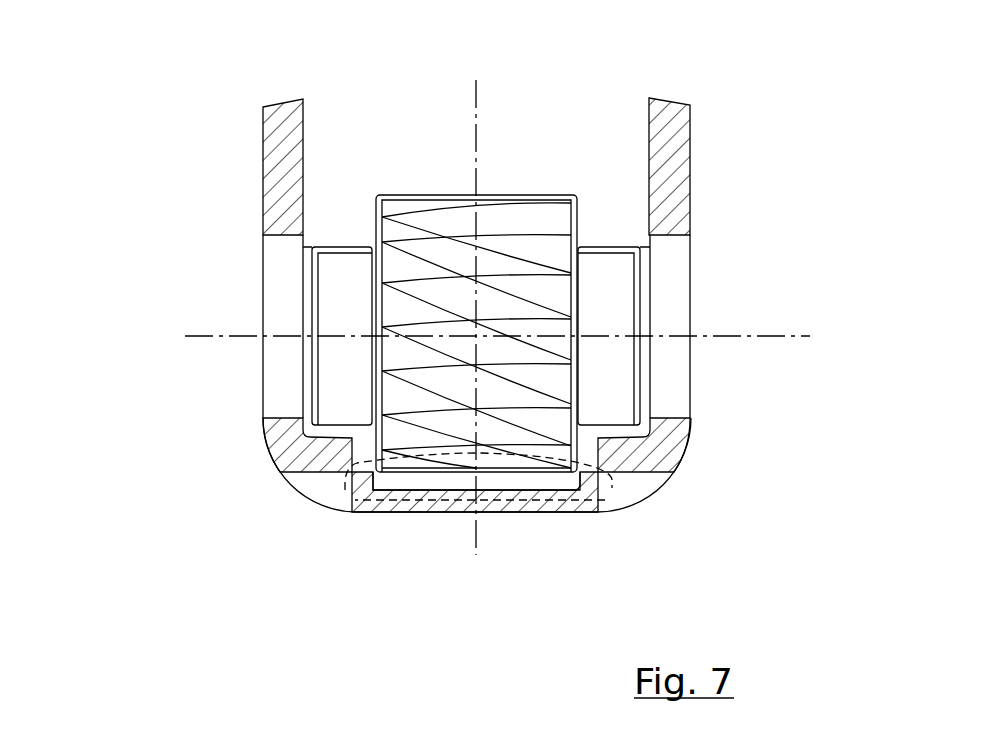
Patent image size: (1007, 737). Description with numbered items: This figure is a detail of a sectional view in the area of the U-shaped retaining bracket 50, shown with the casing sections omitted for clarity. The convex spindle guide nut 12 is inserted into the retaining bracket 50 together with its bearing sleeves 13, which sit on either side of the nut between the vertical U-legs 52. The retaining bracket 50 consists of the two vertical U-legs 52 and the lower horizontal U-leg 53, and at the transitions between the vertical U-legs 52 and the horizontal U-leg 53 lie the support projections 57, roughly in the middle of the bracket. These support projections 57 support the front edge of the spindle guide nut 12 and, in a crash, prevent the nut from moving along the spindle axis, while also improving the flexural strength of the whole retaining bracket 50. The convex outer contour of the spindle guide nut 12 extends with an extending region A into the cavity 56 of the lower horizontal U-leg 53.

The spindle guide nut 12 is at (430, 197).
The bearing sleeves 13 is at (343, 276).
The retaining bracket 50 is at (689, 160).
The vertical U-leg 52 is at (282, 362).
The horizontal U-leg 53 is at (460, 498).
The cavity 56 is at (572, 482).
The support projections 57 is at (343, 452).
The extending region A is at (607, 488).